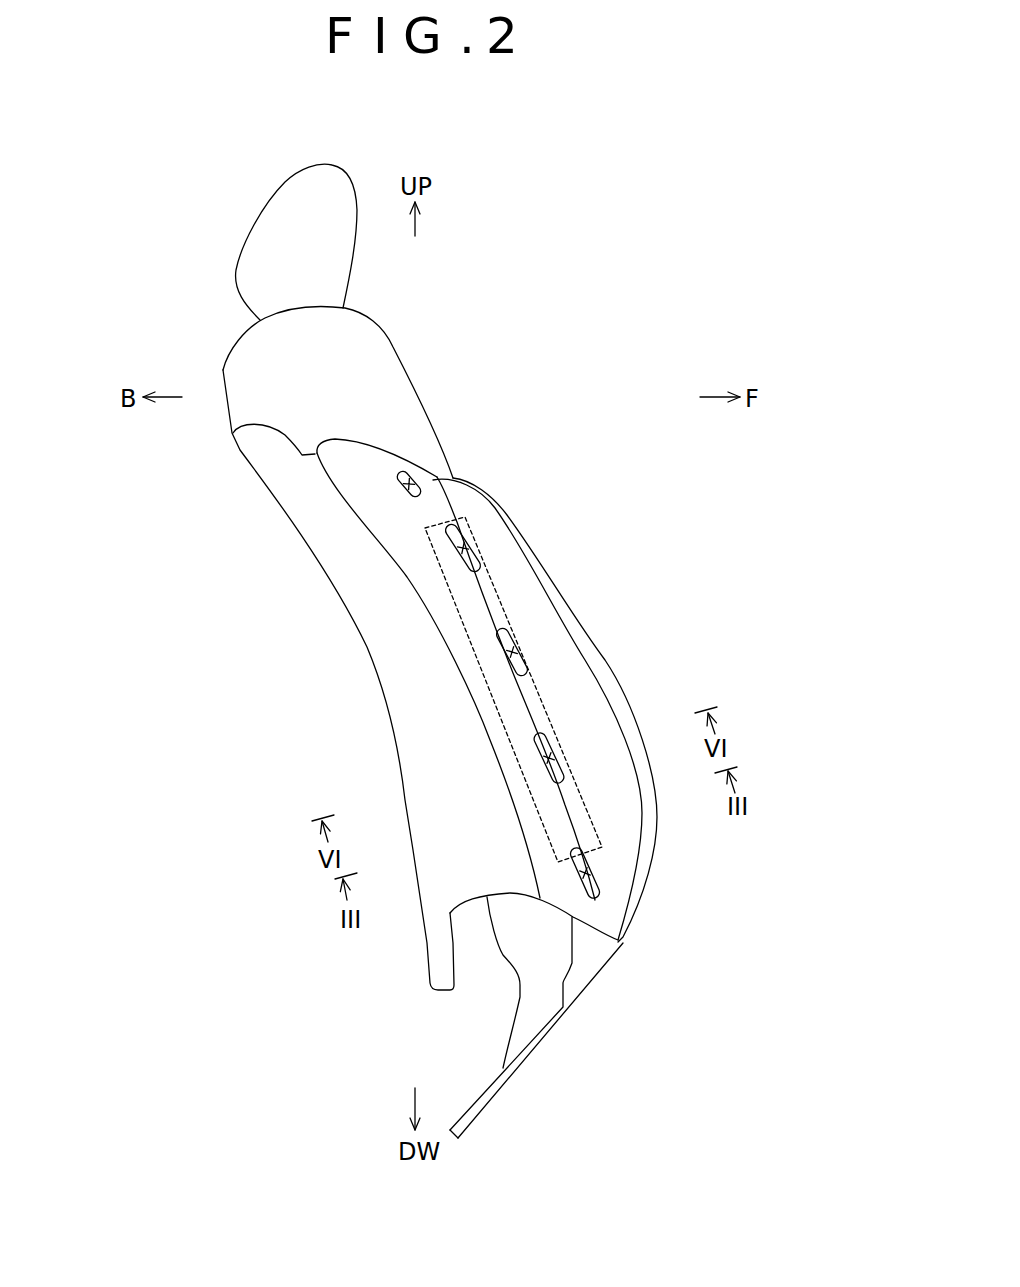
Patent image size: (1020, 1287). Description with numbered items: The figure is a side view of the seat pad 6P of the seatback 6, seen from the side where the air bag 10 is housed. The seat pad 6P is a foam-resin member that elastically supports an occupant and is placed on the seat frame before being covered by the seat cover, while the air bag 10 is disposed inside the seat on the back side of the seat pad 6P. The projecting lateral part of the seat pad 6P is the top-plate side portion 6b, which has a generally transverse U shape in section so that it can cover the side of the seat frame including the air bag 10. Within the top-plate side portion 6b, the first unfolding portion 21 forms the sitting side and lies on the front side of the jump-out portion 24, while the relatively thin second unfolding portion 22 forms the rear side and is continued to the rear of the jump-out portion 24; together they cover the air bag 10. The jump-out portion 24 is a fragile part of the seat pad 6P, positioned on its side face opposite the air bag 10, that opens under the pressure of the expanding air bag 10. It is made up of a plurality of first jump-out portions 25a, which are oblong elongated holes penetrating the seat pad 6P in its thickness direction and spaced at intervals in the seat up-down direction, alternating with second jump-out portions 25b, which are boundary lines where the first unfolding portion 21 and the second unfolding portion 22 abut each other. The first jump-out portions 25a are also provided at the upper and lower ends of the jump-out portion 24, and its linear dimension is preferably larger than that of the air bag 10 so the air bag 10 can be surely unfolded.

The seatback 6 is at (300, 577).
The seat pad 6P is at (215, 342).
The top-plate side portion 6b is at (593, 614).
The air bag 10 is at (602, 847).
The first unfolding portion 21 is at (448, 512).
The second unfolding portion 22 is at (421, 505).
The jump-out portion 24 is at (119, 519).
The first jump-out portion 25a is at (437, 477).
The second jump-out portion 25b is at (447, 513).